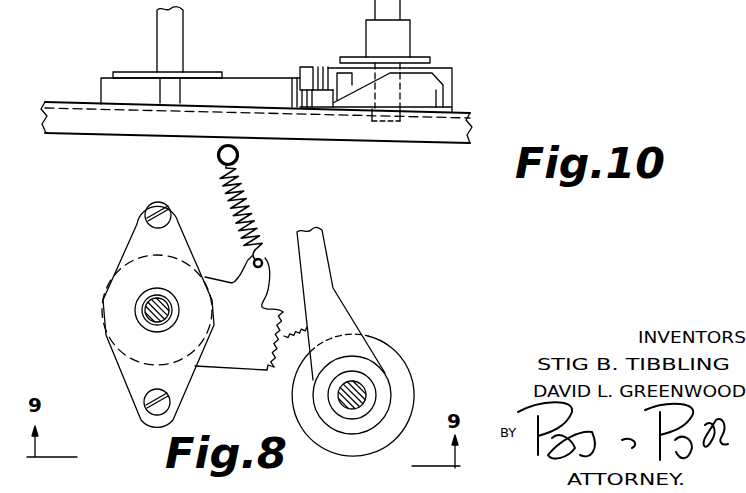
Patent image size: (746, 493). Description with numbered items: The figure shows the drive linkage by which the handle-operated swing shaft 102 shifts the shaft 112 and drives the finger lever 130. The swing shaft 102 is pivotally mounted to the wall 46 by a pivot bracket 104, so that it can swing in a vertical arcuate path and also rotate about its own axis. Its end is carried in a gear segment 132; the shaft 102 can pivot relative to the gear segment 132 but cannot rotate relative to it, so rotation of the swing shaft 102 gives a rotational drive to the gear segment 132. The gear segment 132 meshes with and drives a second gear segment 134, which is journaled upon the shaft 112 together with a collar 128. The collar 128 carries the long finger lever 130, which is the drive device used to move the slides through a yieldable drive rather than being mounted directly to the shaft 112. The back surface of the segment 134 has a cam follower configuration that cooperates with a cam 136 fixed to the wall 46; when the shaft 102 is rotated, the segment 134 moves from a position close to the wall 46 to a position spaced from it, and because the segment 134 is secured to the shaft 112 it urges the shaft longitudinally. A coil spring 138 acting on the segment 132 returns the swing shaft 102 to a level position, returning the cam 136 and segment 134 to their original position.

In FIG. 10, the wall 46 is at (387, 133).
In FIG. 8, the swing shaft 102 is at (167, 274).
In FIG. 8, the pivot bracket 104 is at (135, 228).
In FIG. 10, the shaft 112 is at (405, 0).
In FIG. 8, the shaft 112 is at (350, 380).
In FIG. 8, the collar 128 is at (376, 388).
In FIG. 10, the finger lever 130 is at (433, 58).
In FIG. 8, the finger lever 130 is at (321, 252).
In FIG. 8, the gear segment 132 is at (240, 366).
In FIG. 10, the gear segment 134 is at (302, 72).
In FIG. 8, the gear segment 134 is at (284, 373).
In FIG. 10, the cam 136 is at (255, 66).
In FIG. 8, the coil spring 138 is at (253, 186).